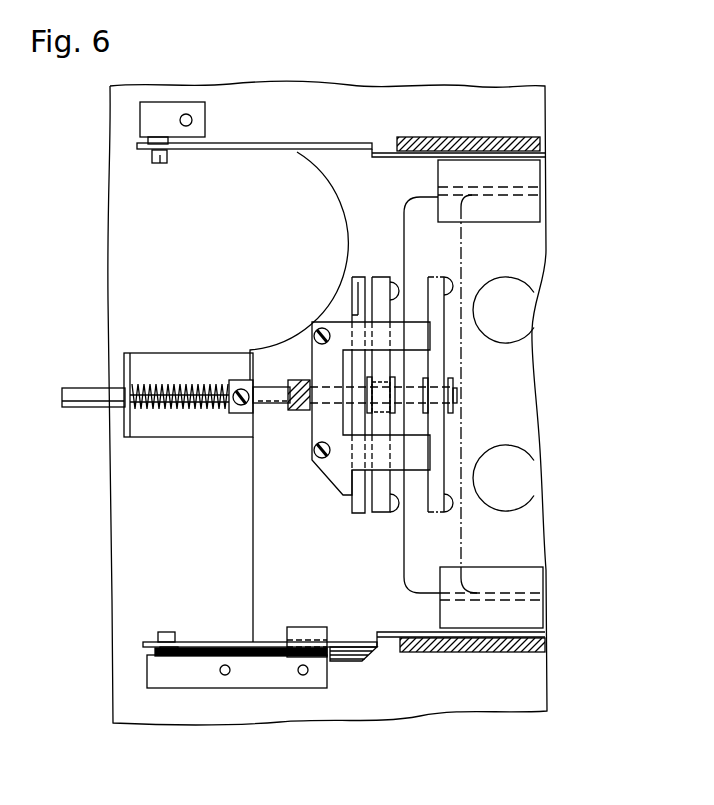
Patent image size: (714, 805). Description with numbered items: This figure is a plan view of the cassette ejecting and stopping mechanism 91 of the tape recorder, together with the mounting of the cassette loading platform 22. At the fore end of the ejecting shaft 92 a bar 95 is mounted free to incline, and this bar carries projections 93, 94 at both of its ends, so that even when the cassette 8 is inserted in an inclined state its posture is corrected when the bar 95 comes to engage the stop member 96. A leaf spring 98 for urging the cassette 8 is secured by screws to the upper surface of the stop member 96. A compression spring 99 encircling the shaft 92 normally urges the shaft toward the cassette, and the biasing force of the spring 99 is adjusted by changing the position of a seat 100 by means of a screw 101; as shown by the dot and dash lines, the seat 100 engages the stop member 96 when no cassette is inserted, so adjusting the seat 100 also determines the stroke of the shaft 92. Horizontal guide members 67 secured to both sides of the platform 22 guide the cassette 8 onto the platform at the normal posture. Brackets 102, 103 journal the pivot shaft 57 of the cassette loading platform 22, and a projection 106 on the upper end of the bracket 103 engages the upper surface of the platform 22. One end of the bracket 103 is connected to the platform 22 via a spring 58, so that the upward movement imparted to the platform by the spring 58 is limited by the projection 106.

The cassette 8 is at (503, 540).
The cassette loading platform 22 is at (265, 576).
The pivot shaft 57 is at (162, 163).
The spring 58 is at (348, 661).
The horizontal guide member 67 is at (525, 172).
The cassette ejecting and stopping mechanism 91 is at (206, 296).
The ejecting shaft 92 is at (88, 393).
The projection 93 is at (391, 277).
The projection 94 is at (396, 512).
The bar 95 is at (372, 277).
The stop member 96 is at (362, 505).
The leaf spring 98 is at (343, 458).
The compression spring 99 is at (172, 412).
The seat 100 is at (237, 413).
The screw 101 is at (231, 380).
The bracket 102 is at (200, 113).
The bracket 103 is at (160, 676).
The projection 106 is at (307, 628).